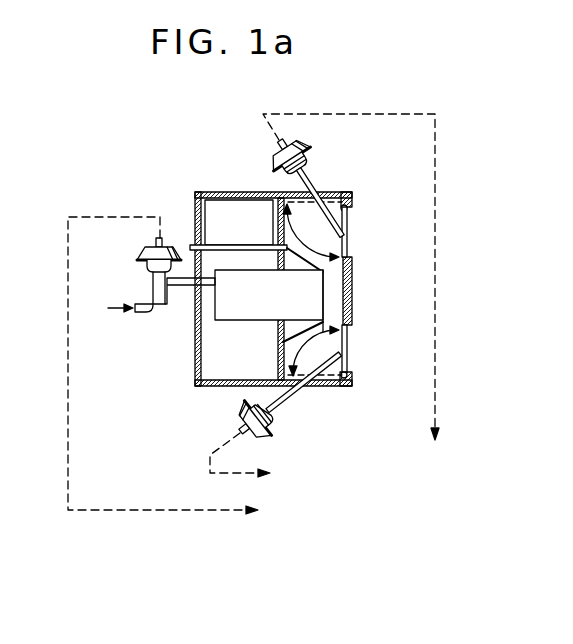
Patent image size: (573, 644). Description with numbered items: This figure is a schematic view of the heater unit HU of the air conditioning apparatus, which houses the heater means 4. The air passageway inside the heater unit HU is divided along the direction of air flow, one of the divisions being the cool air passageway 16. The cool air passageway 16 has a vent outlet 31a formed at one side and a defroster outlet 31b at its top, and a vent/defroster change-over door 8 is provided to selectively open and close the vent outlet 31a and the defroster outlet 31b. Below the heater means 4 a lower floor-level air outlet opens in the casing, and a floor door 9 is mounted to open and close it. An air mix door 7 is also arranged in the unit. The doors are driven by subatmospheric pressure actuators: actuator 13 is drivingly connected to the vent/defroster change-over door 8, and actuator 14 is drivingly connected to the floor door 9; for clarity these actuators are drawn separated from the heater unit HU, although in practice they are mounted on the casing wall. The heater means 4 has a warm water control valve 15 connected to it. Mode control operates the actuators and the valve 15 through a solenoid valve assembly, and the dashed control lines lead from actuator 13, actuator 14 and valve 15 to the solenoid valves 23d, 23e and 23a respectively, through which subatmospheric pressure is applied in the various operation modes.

The heater unit HU is at (190, 363).
The heater means 4 is at (318, 291).
The air mix door 7 is at (222, 213).
The vent/defroster change-over door 8 is at (349, 229).
The floor door 9 is at (342, 351).
The actuator 13 is at (273, 158).
The actuator 14 is at (233, 415).
The warm water control valve 15 is at (150, 252).
The cool air passageway 16 is at (317, 229).
The vent outlet 31a is at (352, 252).
The defroster outlet 31b is at (332, 192).
The solenoid valve 23a is at (195, 374).
The solenoid valve 23d is at (365, 296).
The solenoid valve 23e is at (269, 465).